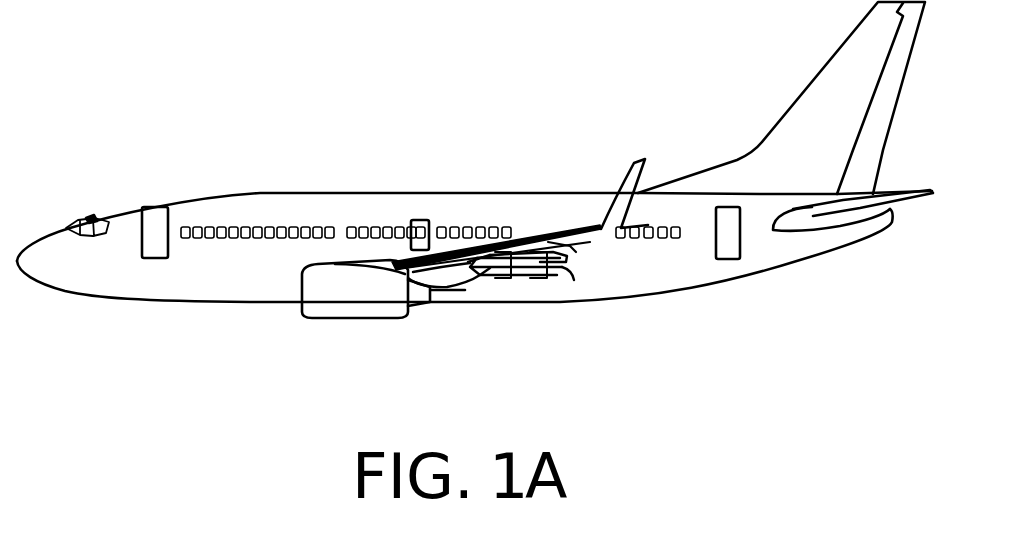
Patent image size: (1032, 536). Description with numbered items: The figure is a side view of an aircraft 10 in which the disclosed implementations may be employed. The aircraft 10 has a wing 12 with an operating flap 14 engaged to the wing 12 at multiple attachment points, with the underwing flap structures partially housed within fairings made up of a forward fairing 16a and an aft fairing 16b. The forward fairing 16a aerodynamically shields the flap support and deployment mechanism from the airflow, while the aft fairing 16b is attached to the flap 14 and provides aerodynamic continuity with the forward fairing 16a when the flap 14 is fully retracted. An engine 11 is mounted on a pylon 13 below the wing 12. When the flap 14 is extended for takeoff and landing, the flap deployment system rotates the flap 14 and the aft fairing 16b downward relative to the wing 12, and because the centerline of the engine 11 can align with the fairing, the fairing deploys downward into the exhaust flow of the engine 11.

The aircraft 10 is at (395, 108).
The engine 11 is at (327, 320).
The wing 12 is at (481, 244).
The pylon 13 is at (381, 262).
The flap 14 is at (566, 265).
The forward fairing 16a is at (503, 255).
The aft fairing 16b is at (539, 255).